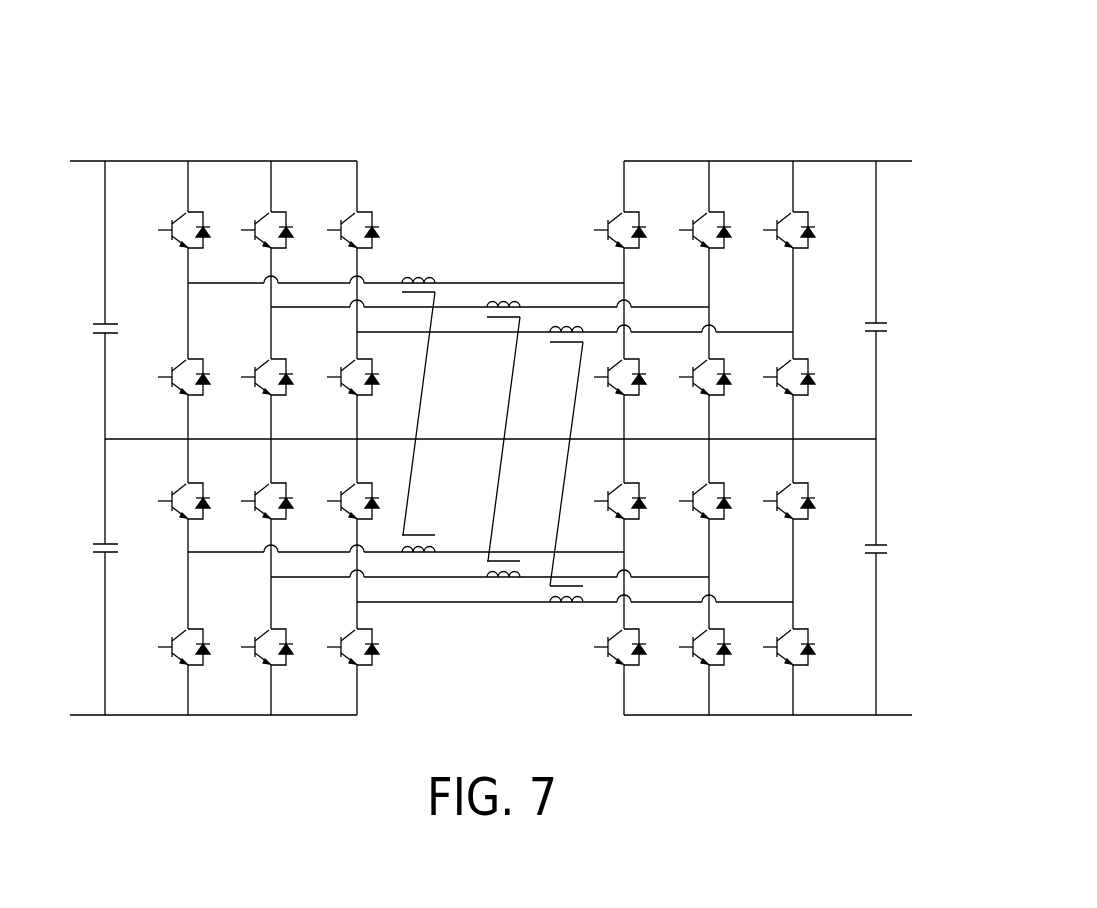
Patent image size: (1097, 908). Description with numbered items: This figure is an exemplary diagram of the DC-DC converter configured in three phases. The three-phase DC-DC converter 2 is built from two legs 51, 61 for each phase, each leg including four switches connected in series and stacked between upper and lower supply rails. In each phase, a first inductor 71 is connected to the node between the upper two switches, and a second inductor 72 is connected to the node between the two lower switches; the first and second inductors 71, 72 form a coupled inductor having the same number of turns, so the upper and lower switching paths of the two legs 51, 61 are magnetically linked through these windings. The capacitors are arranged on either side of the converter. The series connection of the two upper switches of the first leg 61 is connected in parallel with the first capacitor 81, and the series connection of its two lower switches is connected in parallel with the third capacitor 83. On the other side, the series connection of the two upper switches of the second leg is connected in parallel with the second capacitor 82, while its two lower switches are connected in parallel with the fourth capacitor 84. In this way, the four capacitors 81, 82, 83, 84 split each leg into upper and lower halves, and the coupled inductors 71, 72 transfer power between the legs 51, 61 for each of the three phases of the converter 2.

The three-phase DC-DC converter 2 is at (805, 50).
The leg 51 is at (190, 151).
The first leg 61 is at (632, 152).
The first inductor 71 is at (420, 262).
The second inductor 72 is at (417, 527).
The first capacitor 81 is at (102, 323).
The second capacitor 82 is at (880, 322).
The third capacitor 83 is at (102, 542).
The fourth capacitor 84 is at (880, 543).